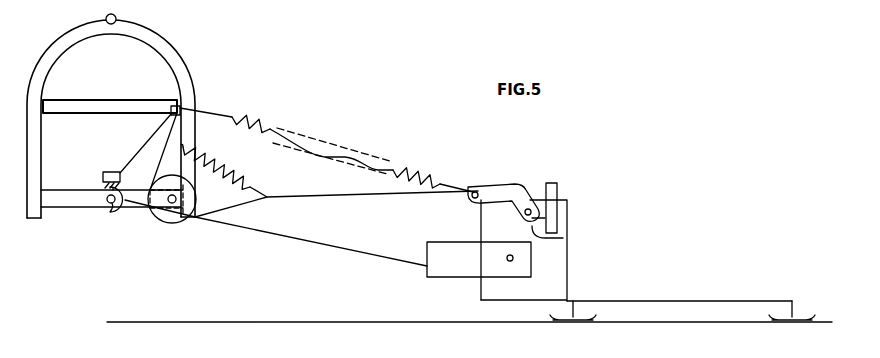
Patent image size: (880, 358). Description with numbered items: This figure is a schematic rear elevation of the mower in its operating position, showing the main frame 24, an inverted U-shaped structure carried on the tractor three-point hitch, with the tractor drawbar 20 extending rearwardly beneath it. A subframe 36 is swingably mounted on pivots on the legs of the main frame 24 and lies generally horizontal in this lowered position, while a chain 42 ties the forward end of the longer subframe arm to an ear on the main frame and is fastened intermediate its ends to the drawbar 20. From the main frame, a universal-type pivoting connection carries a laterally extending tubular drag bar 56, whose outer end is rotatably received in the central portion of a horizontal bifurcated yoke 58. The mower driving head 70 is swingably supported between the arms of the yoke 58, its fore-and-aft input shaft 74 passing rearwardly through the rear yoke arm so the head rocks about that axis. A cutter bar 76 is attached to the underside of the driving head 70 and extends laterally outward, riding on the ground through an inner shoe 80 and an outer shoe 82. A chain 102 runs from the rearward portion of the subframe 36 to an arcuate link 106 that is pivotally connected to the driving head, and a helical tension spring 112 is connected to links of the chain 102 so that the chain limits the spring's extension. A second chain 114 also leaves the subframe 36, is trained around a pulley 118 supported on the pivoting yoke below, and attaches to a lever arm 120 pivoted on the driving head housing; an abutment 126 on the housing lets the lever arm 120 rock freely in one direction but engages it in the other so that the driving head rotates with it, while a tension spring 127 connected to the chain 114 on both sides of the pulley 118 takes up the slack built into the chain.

The drawbar 20 is at (103, 172).
The main frame 24 is at (182, 67).
The subframe 36 is at (83, 100).
The chain 42 is at (137, 149).
The drag bar 56 is at (300, 242).
The yoke 58 is at (448, 278).
The mower driving head 70 is at (568, 273).
The input shaft 74 is at (507, 258).
The cutter bar 76 is at (724, 300).
The inner shoe 80 is at (581, 325).
The outer shoe 82 is at (790, 325).
The chain 102 is at (340, 153).
The arcuate link 106 is at (498, 184).
The helical tension spring 112 is at (412, 169).
The second chain 114 is at (342, 195).
The pulley 118 is at (168, 222).
The lever arm 120 is at (558, 196).
The abutment 126 is at (565, 237).
The tension spring 127 is at (240, 171).